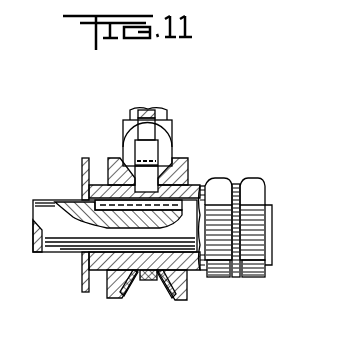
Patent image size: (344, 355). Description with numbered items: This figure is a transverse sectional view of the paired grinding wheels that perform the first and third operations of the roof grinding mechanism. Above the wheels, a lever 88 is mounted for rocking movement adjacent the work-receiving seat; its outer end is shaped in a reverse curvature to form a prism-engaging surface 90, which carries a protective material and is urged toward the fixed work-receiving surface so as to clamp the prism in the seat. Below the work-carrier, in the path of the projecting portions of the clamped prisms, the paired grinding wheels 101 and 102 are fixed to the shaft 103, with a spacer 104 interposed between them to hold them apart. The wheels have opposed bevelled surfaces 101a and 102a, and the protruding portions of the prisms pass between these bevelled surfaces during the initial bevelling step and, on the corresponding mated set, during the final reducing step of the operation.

The lever 88 is at (150, 128).
The prism-engaging surface 90 is at (150, 152).
The grinding wheel 101 is at (108, 164).
The grinding wheel 102 is at (188, 166).
The shaft 103 is at (70, 247).
The bevelled surface 101a is at (124, 298).
The bevelled surface 102a is at (175, 300).
The spacer 104 is at (152, 280).